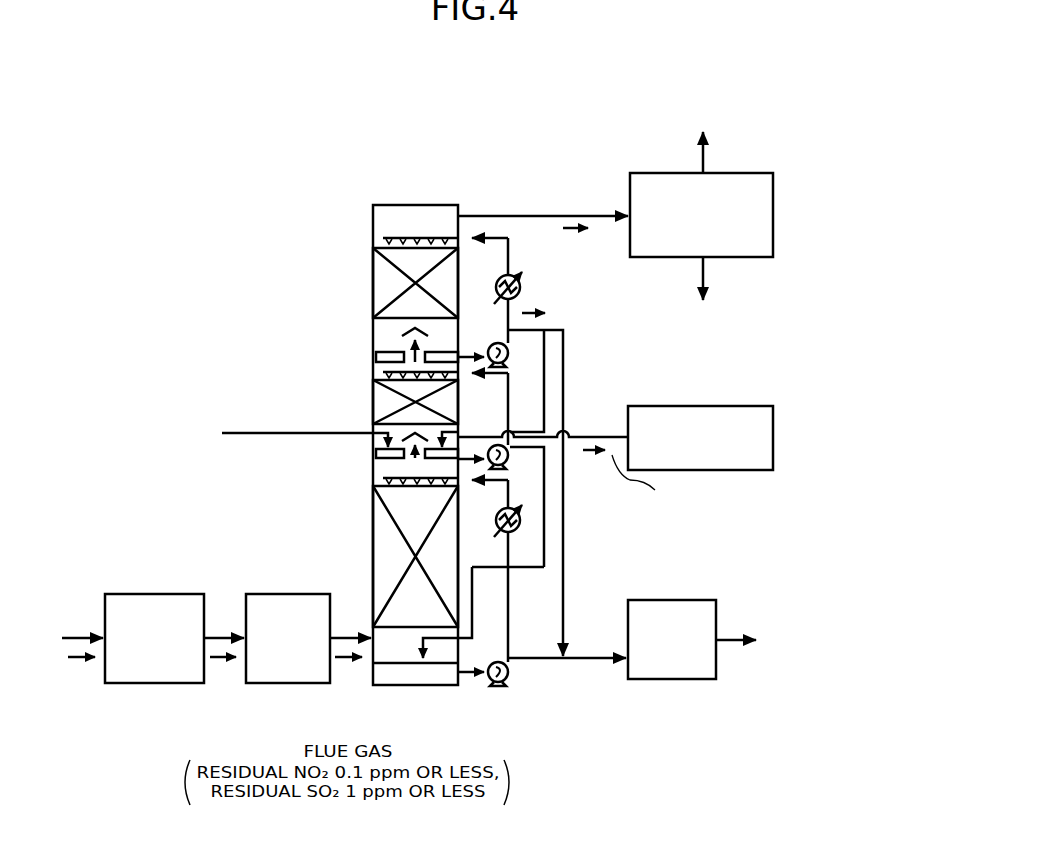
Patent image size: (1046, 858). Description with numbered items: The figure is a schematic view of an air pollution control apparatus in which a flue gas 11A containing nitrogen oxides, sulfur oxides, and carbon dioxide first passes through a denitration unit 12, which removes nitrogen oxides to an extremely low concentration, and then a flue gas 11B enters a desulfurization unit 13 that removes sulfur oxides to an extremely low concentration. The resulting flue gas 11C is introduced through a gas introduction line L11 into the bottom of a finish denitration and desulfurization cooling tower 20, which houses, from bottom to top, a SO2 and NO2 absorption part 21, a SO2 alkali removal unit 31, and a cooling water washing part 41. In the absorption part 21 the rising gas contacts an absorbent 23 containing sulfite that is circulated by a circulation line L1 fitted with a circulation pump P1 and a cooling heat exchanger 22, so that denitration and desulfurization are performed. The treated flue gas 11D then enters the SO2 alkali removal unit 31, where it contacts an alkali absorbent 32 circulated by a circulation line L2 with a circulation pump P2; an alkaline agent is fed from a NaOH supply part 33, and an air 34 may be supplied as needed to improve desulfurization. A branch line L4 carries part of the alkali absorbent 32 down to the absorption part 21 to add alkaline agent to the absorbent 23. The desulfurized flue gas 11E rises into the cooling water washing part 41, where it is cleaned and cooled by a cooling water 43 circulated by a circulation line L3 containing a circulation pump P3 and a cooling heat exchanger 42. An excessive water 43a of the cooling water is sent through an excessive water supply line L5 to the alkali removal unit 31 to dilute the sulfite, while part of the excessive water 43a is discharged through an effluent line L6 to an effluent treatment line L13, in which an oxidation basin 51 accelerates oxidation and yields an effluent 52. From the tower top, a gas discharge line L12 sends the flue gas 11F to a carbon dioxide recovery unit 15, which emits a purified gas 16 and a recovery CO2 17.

The finish denitration and desulfurization cooling tower 20 is at (408, 152).
The cooling water washing part 41 is at (368, 210).
The SO2 alkali removal unit 31 is at (368, 362).
The SO2 and NO2 absorption part 21 is at (368, 625).
The desulfurized flue gas 11E is at (375, 358).
The flue gas subjected to denitration and desulfurization 11D is at (375, 462).
The air 34 is at (240, 433).
The absorbent containing sulfite 23 is at (455, 687).
The cooling water 43 is at (492, 236).
The cooling heat exchanger 42 is at (522, 288).
The excessive water 43a is at (565, 305).
The alkali absorbent 32 is at (500, 380).
The cooling heat exchanger 22 is at (520, 526).
The carbon dioxide recovery unit 15 is at (775, 215).
The purified gas 16 is at (710, 140).
The recovery CO2 17 is at (708, 272).
The NaOH supply part 33 is at (775, 440).
The oxidation basin 51 is at (655, 681).
The effluent 52 is at (735, 645).
The denitration unit 12 is at (138, 594).
The desulfurization unit 13 is at (288, 684).
The flue gas 11A is at (80, 662).
The flue gas 11B is at (220, 662).
The flue gas 11C is at (350, 662).
The flue gas after advanced denitration and desulfurization cooling treatment 11F is at (577, 232).
The circulation pump P1 is at (505, 680).
The circulation pump P2 is at (508, 462).
The circulation pump P3 is at (508, 350).
The circulation line L1 is at (512, 588).
The circulation line L2 is at (512, 437).
The circulation line L3 is at (508, 246).
The branch line L4 is at (546, 558).
The excessive water supply line L5 is at (545, 401).
The effluent line L6 is at (566, 588).
The gas introduction line L11 is at (362, 636).
The gas discharge line L12 is at (577, 214).
The effluent treatment line L13 is at (585, 660).